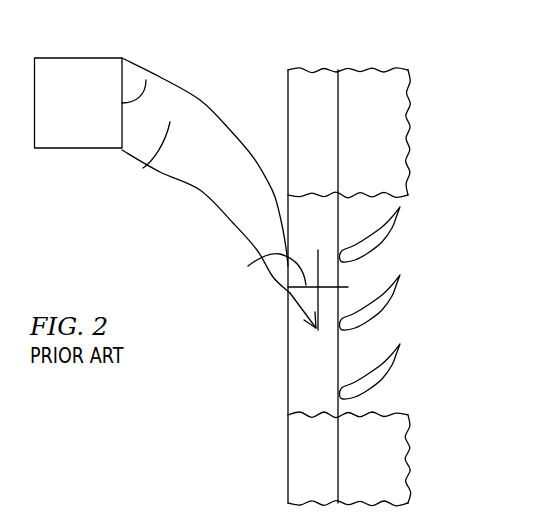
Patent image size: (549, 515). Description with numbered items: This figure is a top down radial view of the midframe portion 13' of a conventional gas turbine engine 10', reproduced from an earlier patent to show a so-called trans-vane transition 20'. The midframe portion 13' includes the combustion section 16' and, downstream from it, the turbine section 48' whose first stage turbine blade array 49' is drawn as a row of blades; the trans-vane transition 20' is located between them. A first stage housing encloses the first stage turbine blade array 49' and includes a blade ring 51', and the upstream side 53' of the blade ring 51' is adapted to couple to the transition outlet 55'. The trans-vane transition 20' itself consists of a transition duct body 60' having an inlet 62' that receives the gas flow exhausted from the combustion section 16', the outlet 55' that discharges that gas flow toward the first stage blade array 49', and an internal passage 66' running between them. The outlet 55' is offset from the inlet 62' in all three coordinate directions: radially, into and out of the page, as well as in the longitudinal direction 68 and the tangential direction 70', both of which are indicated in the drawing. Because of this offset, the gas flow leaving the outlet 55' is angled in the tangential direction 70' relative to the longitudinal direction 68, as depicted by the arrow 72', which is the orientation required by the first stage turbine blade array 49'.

The gas turbine engine 10' is at (477, 44).
The midframe portion 13' is at (205, 145).
The combustion section 16' is at (79, 103).
The trans-vane transition 20' is at (206, 221).
The turbine section 48' is at (484, 270).
The first stage turbine blade array 49' is at (397, 303).
The blade ring 51' is at (377, 133).
The upstream side of the blade ring 53' is at (319, 288).
The transition outlet 55' is at (248, 295).
The transition duct body 60' is at (130, 159).
The inlet 62' is at (112, 58).
The internal passage 66' is at (201, 138).
The longitudinal direction 68 is at (248, 266).
The tangential direction 70' is at (371, 286).
The arrow 72' is at (272, 318).